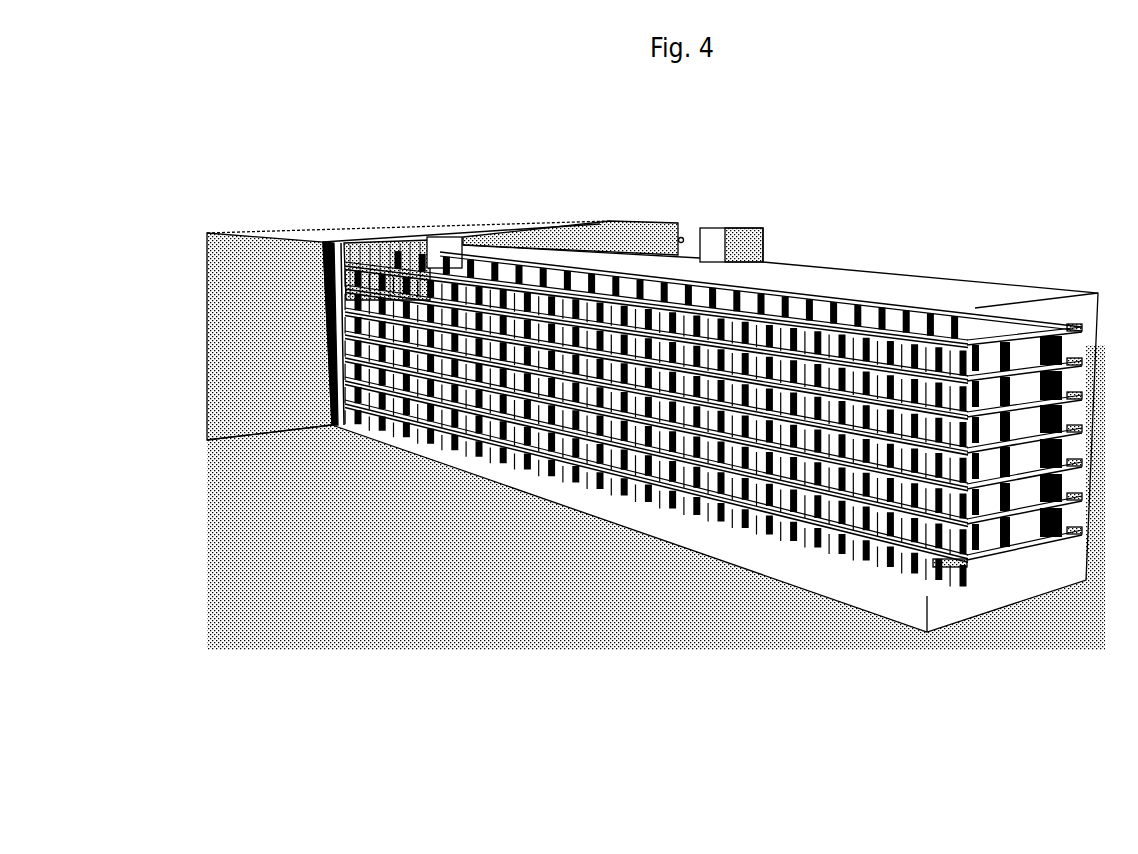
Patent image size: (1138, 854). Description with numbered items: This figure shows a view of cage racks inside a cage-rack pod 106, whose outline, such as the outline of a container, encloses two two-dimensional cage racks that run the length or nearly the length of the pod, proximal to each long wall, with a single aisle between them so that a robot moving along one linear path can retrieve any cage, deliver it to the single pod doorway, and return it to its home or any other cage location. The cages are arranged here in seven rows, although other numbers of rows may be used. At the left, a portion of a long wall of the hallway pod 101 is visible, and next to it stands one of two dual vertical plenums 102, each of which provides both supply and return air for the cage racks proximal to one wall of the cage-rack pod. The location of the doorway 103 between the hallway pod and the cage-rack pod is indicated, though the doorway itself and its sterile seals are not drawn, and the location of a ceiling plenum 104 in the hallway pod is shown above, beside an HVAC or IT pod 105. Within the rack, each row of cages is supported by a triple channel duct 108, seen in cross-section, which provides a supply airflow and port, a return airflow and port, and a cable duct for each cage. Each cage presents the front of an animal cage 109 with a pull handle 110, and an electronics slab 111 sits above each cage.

The long wall of hallway pod 101 is at (247, 297).
The dual vertical plenum 102 is at (353, 238).
The doorway location 103 is at (418, 238).
The ceiling plenum location 104 is at (613, 223).
The HVAC or IT pod 105 is at (757, 227).
The cage-rack pod outline 106 is at (830, 268).
The triple channel duct 108 is at (950, 570).
The animal cage front 109 is at (872, 572).
The pull handle 110 is at (833, 550).
The electronics slab 111 is at (800, 545).